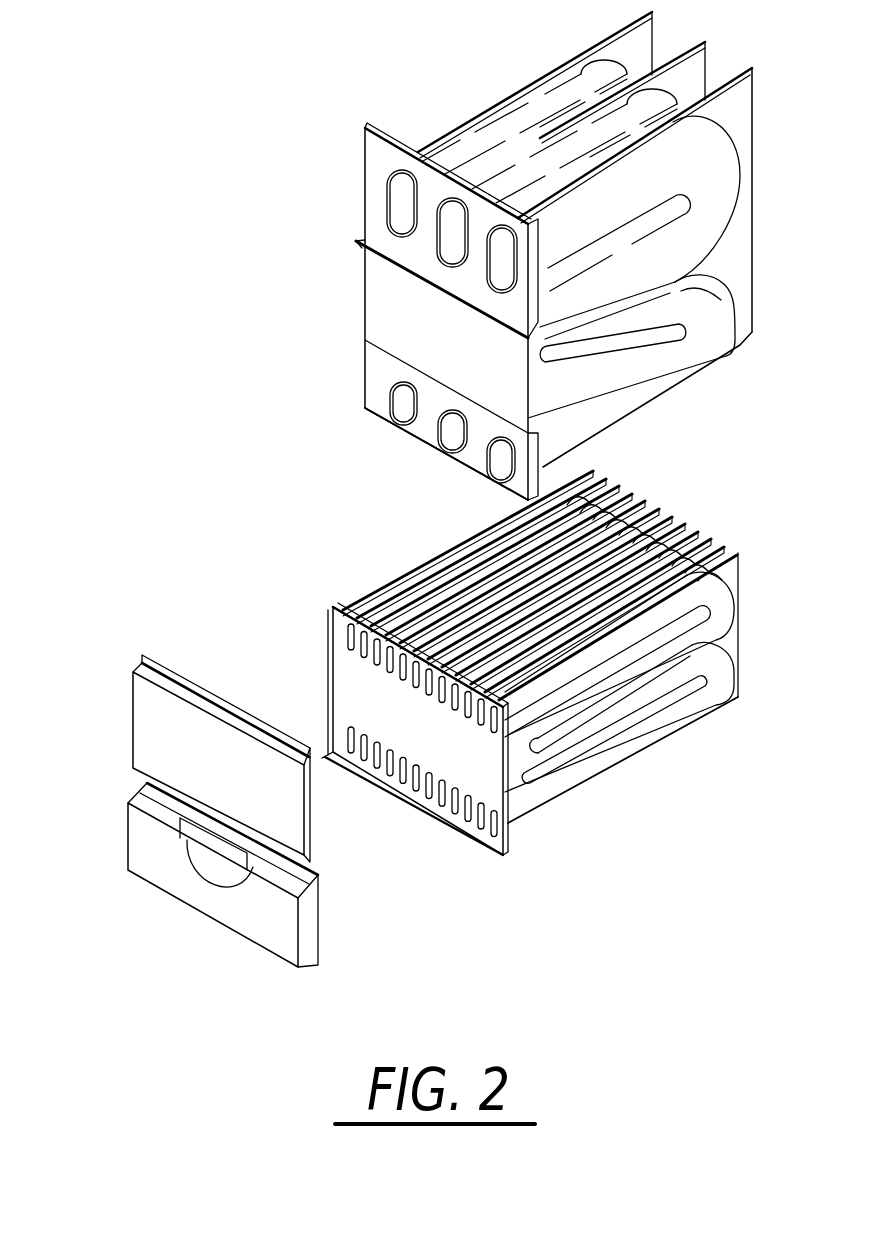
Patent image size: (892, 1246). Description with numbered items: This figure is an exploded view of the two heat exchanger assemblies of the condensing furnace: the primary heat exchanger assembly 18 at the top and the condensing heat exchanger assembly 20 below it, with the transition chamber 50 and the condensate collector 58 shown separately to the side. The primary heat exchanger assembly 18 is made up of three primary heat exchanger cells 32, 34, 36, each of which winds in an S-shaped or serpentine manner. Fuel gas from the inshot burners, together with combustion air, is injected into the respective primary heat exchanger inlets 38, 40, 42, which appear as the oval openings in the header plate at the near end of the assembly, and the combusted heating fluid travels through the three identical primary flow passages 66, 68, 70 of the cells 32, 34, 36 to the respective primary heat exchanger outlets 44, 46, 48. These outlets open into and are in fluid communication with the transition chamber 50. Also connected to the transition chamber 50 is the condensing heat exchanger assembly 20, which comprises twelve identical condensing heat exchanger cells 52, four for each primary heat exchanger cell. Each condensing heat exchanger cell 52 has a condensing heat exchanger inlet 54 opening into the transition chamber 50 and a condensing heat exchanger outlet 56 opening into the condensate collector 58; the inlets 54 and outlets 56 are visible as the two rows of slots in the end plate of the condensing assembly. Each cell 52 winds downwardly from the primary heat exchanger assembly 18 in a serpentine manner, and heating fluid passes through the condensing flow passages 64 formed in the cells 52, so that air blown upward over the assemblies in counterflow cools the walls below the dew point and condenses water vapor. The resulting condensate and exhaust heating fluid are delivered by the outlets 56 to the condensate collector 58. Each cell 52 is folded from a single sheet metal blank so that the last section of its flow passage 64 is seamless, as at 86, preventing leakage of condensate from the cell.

The primary heat exchanger assembly 18 is at (462, 99).
The condensing heat exchanger assembly 20 is at (390, 564).
The primary heat exchanger cell 32 is at (733, 110).
The primary heat exchanger cell 34 is at (690, 62).
The primary heat exchanger cell 36 is at (641, 37).
The primary heat exchanger inlet 38 is at (522, 290).
The primary heat exchanger inlet 40 is at (506, 262).
The primary heat exchanger inlet 42 is at (420, 213).
The primary heat exchanger outlet 44 is at (492, 456).
The primary heat exchanger outlet 46 is at (447, 432).
The primary heat exchanger outlet 48 is at (392, 402).
The transition chamber 50 is at (157, 730).
The condensing heat exchanger cell 52 is at (560, 472).
The condensing heat exchanger inlet 54 is at (492, 720).
The condensing heat exchanger outlet 56 is at (325, 758).
The condensate collector 58 is at (157, 845).
The condensing flow passage 64 is at (712, 607).
The primary flow passage 66 is at (707, 202).
The primary flow passage 68 is at (565, 155).
The primary flow passage 70 is at (527, 118).
The seamless section 86 is at (621, 760).